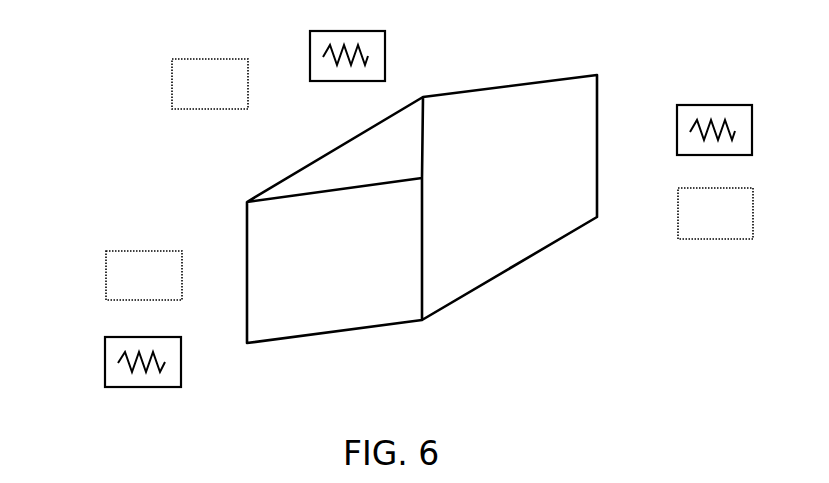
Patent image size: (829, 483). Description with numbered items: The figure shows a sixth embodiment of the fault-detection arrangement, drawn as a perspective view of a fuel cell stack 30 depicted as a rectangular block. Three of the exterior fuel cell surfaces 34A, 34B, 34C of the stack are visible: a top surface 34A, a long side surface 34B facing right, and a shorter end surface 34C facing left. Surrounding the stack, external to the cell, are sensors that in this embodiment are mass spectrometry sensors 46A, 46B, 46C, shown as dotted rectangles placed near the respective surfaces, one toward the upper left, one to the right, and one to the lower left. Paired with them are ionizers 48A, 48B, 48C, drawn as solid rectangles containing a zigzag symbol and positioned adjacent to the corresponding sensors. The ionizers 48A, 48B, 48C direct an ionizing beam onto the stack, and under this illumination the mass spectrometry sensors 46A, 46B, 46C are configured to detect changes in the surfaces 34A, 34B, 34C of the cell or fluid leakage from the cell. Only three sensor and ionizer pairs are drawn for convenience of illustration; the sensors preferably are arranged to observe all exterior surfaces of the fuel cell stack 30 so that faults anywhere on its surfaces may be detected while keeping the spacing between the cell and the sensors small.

The fuel cell stack 30 is at (477, 290).
The fuel cell surface 34A is at (488, 107).
The fuel cell surface 34B is at (523, 217).
The fuel cell surface 34C is at (272, 270).
The mass spectrometry sensor 46A is at (172, 102).
The mass spectrometry sensor 46B is at (720, 239).
The mass spectrometry sensor 46C is at (106, 291).
The ionizer 48A is at (385, 57).
The ionizer 48B is at (752, 130).
The ionizer 48C is at (105, 363).